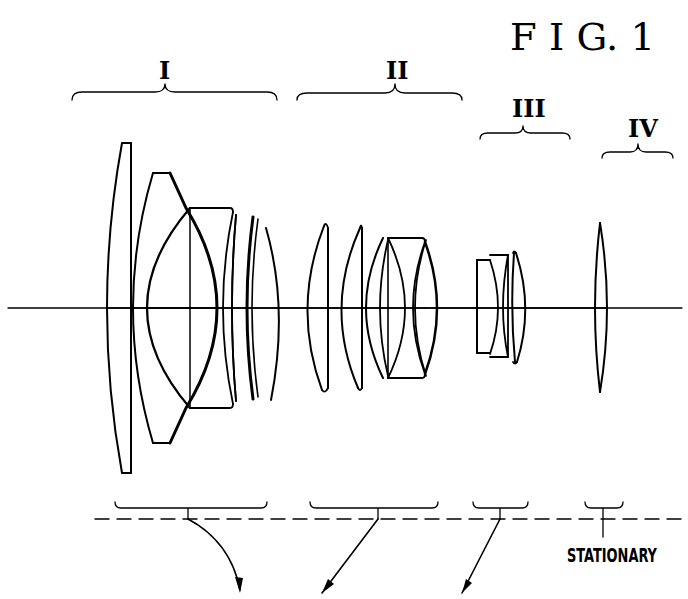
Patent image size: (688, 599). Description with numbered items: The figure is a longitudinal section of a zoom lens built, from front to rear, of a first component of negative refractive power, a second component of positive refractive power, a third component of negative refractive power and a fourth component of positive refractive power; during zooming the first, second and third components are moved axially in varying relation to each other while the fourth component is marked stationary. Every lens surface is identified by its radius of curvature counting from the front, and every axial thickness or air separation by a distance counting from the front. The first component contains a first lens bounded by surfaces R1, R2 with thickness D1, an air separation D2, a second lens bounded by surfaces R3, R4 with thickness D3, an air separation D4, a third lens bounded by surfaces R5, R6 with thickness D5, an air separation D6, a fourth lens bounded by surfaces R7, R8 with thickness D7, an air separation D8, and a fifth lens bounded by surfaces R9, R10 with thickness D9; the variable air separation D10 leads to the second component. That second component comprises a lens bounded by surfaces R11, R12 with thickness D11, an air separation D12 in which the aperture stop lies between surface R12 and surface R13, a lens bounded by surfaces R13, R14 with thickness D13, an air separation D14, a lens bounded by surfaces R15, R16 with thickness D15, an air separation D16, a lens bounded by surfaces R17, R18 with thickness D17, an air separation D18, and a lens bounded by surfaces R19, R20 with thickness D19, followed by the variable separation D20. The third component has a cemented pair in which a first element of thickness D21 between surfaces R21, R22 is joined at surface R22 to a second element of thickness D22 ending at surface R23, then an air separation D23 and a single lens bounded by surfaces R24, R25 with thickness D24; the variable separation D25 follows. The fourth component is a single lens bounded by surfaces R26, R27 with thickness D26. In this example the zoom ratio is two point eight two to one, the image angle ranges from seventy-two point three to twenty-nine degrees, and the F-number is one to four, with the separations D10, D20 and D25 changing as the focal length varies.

The radius of curvature of first lens surface R1 is at (118, 157).
The radius of curvature of second lens surface R2 is at (123, 143).
The radius of curvature of third lens surface R3 is at (145, 190).
The radius of curvature of fourth lens surface R4 is at (163, 172).
The radius of curvature of fifth lens surface R5 is at (188, 208).
The radius of curvature of sixth lens surface R6 is at (190, 208).
The radius of curvature of seventh lens surface R7 is at (214, 228).
The radius of curvature of eighth lens surface R8 is at (233, 226).
The radius of curvature of ninth lens surface R9 is at (253, 217).
The radius of curvature of tenth lens surface R10 is at (262, 232).
The radius of curvature of eleventh lens surface R11 is at (320, 228).
The radius of curvature of twelfth lens surface R12 is at (326, 230).
The radius of curvature of thirteenth lens surface R13 is at (360, 228).
The radius of curvature of fourteenth lens surface R14 is at (362, 230).
The radius of curvature of fifteenth lens surface R15 is at (380, 237).
The radius of curvature of sixteenth lens surface R16 is at (390, 240).
The radius of curvature of seventeenth lens surface R17 is at (400, 240).
The radius of curvature of eighteenth lens surface R18 is at (417, 240).
The radius of curvature of nineteenth lens surface R19 is at (435, 247).
The radius of curvature of twentieth lens surface R20 is at (438, 255).
The radius of curvature of twenty-first lens surface R21 is at (476, 258).
The radius of curvature of twenty-second lens surface R22 is at (491, 256).
The radius of curvature of twenty-third lens surface R23 is at (503, 254).
The radius of curvature of twenty-fourth lens surface R24 is at (513, 262).
The radius of curvature of twenty-fifth lens surface R25 is at (525, 277).
The radius of curvature of twenty-sixth lens surface R26 is at (593, 227).
The radius of curvature of twenty-seventh lens surface R27 is at (605, 243).
The first lens thickness D1 is at (113, 312).
The second air separation D2 is at (122, 312).
The third lens thickness D3 is at (125, 420).
The fourth air separation D4 is at (150, 443).
The fifth lens thickness D5 is at (180, 412).
The sixth air separation D6 is at (192, 410).
The seventh lens thickness D7 is at (208, 407).
The eighth air separation D8 is at (233, 407).
The ninth lens thickness D9 is at (244, 413).
The tenth air separation D10 is at (274, 412).
The eleventh lens thickness D11 is at (312, 385).
The twelfth air separation D12 is at (332, 385).
The thirteenth lens thickness D13 is at (343, 387).
The fourteenth air separation D14 is at (362, 388).
The fifteenth lens thickness D15 is at (383, 380).
The sixteenth air separation D16 is at (395, 380).
The seventeenth lens thickness D17 is at (413, 380).
The eighteenth air separation D18 is at (430, 378).
The nineteenth lens thickness D19 is at (443, 378).
The twentieth air separation D20 is at (463, 312).
The twenty-first lens thickness D21 is at (478, 353).
The twenty-second lens thickness D22 is at (505, 357).
The twenty-third air separation D23 is at (518, 363).
The twenty-fourth lens thickness D24 is at (525, 314).
The twenty-fifth air separation D25 is at (570, 310).
The twenty-sixth lens thickness D26 is at (607, 333).